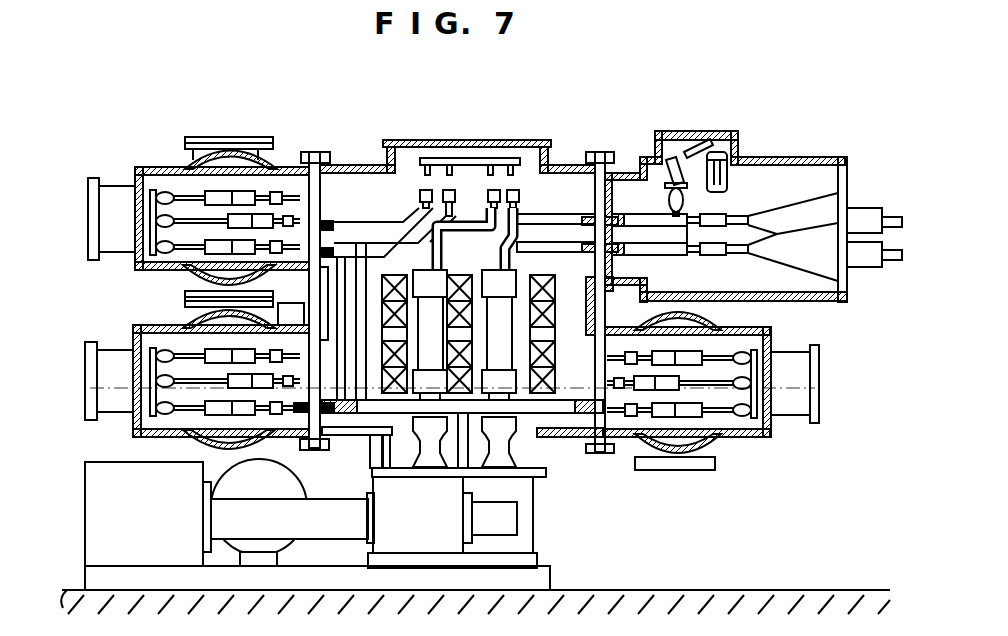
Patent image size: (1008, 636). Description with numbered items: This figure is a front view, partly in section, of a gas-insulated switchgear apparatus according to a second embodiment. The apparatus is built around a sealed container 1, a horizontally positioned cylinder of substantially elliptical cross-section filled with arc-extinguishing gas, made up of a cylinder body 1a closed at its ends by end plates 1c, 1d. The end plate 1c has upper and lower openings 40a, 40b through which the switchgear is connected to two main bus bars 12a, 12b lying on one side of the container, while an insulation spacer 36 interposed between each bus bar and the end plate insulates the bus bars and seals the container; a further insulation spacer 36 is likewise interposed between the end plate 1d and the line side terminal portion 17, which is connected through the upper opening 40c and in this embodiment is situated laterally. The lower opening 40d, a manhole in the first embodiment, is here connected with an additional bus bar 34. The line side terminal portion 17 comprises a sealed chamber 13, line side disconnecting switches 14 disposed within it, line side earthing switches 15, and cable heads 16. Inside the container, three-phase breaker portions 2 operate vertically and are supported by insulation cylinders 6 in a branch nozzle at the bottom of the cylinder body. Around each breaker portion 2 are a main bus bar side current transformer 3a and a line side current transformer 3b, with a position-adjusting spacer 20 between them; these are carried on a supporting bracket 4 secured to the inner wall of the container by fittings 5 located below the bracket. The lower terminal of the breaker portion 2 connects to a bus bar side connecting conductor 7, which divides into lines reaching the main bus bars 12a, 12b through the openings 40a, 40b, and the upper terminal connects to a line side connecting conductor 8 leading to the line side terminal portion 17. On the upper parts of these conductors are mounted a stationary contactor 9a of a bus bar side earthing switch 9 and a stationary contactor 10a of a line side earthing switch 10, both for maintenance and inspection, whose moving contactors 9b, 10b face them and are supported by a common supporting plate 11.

The sealed container 1 is at (464, 267).
The cylinder body 1a is at (365, 165).
The end plate 1c is at (309, 267).
The end plate 1d is at (616, 260).
The breaker portion 2 is at (514, 287).
The main bus bar side current transformer 3a is at (590, 437).
The line side current transformer 3b is at (588, 312).
The supporting bracket 4 is at (588, 415).
The fittings 5 is at (380, 472).
The insulation cylinder 6 is at (512, 450).
The bus bar side connecting conductor 7 is at (363, 434).
The line side connecting conductor 8 is at (556, 214).
The bus bar side earthing switch 9 is at (395, 244).
The stationary contactor 9a is at (425, 190).
The moving contactor 9b is at (447, 190).
The line side earthing switch 10 is at (511, 173).
The stationary contactor 10a is at (520, 190).
The moving contactor 10b is at (495, 190).
The common supporting plate 11 is at (482, 140).
The main bus bar 12a is at (168, 164).
The main bus bar 12b is at (152, 325).
The sealed chamber 13 is at (833, 300).
The line side disconnecting switch 14 is at (765, 205).
The line side earthing switch 15 is at (722, 210).
The cable head 16 is at (795, 210).
The line side terminal portion 17 is at (753, 221).
The spacer 20 is at (588, 420).
The additional bus bar 34 is at (712, 409).
The insulation spacer 36 is at (303, 152).
The opening 40a is at (318, 152).
The opening 40b is at (314, 450).
The opening 40c is at (600, 152).
The opening 40d is at (672, 469).